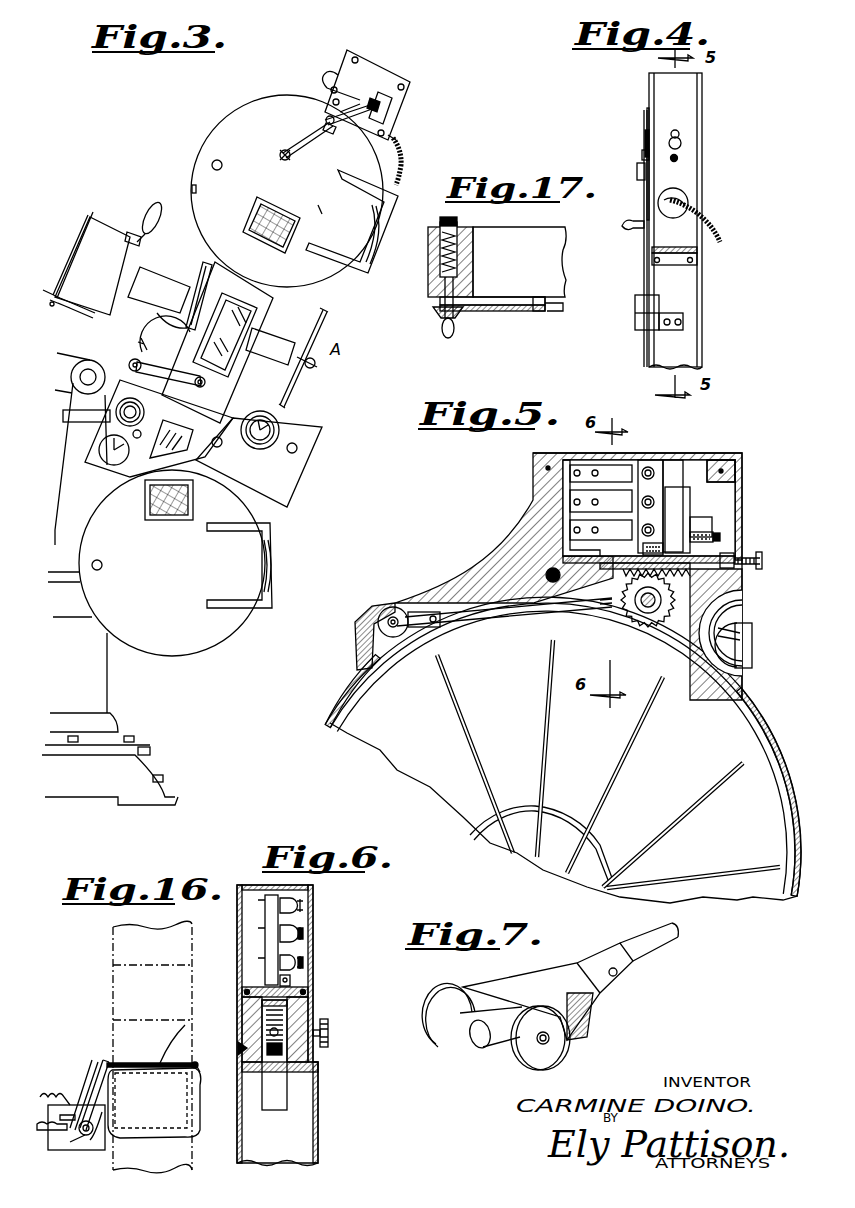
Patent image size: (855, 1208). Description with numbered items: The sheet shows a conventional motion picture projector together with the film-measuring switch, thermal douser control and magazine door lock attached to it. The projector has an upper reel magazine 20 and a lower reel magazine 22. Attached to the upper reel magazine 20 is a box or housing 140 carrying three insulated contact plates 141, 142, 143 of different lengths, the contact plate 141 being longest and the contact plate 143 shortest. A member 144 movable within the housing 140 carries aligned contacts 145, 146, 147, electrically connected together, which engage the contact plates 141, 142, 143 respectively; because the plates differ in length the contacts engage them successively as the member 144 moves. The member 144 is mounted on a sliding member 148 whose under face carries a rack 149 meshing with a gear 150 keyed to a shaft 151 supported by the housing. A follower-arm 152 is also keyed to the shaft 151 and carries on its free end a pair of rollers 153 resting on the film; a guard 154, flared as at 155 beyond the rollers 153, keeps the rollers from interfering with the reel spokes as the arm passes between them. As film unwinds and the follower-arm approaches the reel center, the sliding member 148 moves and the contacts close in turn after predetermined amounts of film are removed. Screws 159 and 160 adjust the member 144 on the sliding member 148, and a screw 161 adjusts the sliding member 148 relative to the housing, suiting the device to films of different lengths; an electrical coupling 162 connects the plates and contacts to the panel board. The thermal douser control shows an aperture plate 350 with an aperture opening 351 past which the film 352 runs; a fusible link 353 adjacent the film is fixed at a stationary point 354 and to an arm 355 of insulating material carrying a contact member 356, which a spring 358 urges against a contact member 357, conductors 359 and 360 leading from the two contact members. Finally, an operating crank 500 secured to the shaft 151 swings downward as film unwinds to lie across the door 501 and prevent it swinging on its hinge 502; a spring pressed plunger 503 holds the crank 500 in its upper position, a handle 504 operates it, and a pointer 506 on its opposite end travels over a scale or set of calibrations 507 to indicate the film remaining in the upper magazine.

In FIG. 3, the upper reel magazine 20 is at (327, 272).
In FIG. 4, the upper reel magazine 20 is at (700, 286).
In FIG. 5, the upper reel magazine 20 is at (770, 748).
In FIG. 6, the upper reel magazine 20 is at (318, 1125).
In FIG. 3, the lower reel magazine 22 is at (212, 633).
In FIG. 5, the housing 140 is at (735, 495).
In FIG. 5, the contact plate 141 is at (565, 462).
In FIG. 6, the contact plate 141 is at (297, 893).
In FIG. 5, the contact plate 142 is at (570, 495).
In FIG. 6, the contact plate 142 is at (297, 921).
In FIG. 5, the contact plate 143 is at (570, 525).
In FIG. 6, the contact plate 143 is at (300, 952).
In FIG. 5, the member 144 is at (710, 460).
In FIG. 5, the contact 145 is at (648, 467).
In FIG. 6, the contact 145 is at (298, 906).
In FIG. 5, the contact 146 is at (675, 470).
In FIG. 6, the contact 146 is at (303, 933).
In FIG. 5, the contact 147 is at (690, 503).
In FIG. 6, the contact 147 is at (303, 964).
In FIG. 5, the sliding member 148 is at (725, 580).
In FIG. 6, the sliding member 148 is at (308, 990).
In FIG. 5, the rack 149 is at (712, 590).
In FIG. 6, the rack 149 is at (308, 1003).
In FIG. 5, the gear 150 is at (722, 608).
In FIG. 6, the gear 150 is at (285, 1055).
In FIG. 5, the shaft 151 is at (652, 612).
In FIG. 6, the shaft 151 is at (330, 1033).
In FIG. 3, the follower-arm 152 is at (312, 133).
In FIG. 5, the follower-arm 152 is at (538, 608).
In FIG. 7, the follower-arm 152 is at (660, 948).
In FIG. 3, the rollers 153 is at (282, 151).
In FIG. 5, the rollers 153 is at (378, 622).
In FIG. 7, the rollers 153 is at (463, 993).
In FIG. 5, the guard 154 is at (435, 612).
In FIG. 7, the guard 154 is at (600, 982).
In FIG. 5, the flared portion 155 is at (430, 616).
In FIG. 7, the flared portion 155 is at (580, 1020).
In FIG. 5, the screw 159 is at (720, 537).
In FIG. 5, the screw 160 is at (620, 569).
In FIG. 4, the screw 161 is at (677, 159).
In FIG. 5, the screw 161 is at (762, 560).
In FIG. 3, the electrical coupling 162 is at (400, 145).
In FIG. 4, the electrical coupling 162 is at (690, 200).
In FIG. 5, the electrical coupling 162 is at (752, 658).
In FIG. 16, the aperture plate 350 is at (200, 1100).
In FIG. 16, the aperture opening 351 is at (198, 1063).
In FIG. 16, the film 352 is at (180, 955).
In FIG. 16, the fusible link 353 is at (185, 1025).
In FIG. 16, the stationary point 354 is at (197, 1062).
In FIG. 16, the arm 355 is at (88, 1062).
In FIG. 16, the contact member 356 is at (97, 1060).
In FIG. 16, the contact member 357 is at (76, 1145).
In FIG. 16, the spring 358 is at (103, 1135).
In FIG. 16, the conductor 359 is at (60, 1095).
In FIG. 16, the conductor 360 is at (45, 1132).
In FIG. 3, the operating crank 500 is at (350, 115).
In FIG. 17, the operating crank 500 is at (505, 298).
In FIG. 3, the door 501 is at (325, 206).
In FIG. 17, the door 501 is at (543, 312).
In FIG. 4, the door 501 is at (644, 268).
In FIG. 3, the hinge 502 is at (378, 210).
In FIG. 3, the spring pressed plunger 503 is at (336, 76).
In FIG. 17, the spring pressed plunger 503 is at (438, 305).
In FIG. 4, the spring pressed plunger 503 is at (640, 154).
In FIG. 5, the spring pressed plunger 503 is at (549, 572).
In FIG. 3, the handle 504 is at (327, 134).
In FIG. 17, the handle 504 is at (443, 332).
In FIG. 4, the handle 504 is at (632, 230).
In FIG. 3, the pointer 506 is at (380, 95).
In FIG. 17, the pointer 506 is at (560, 310).
In FIG. 4, the pointer 506 is at (643, 136).
In FIG. 3, the scale 507 is at (395, 95).
In FIG. 4, the scale 507 is at (645, 115).